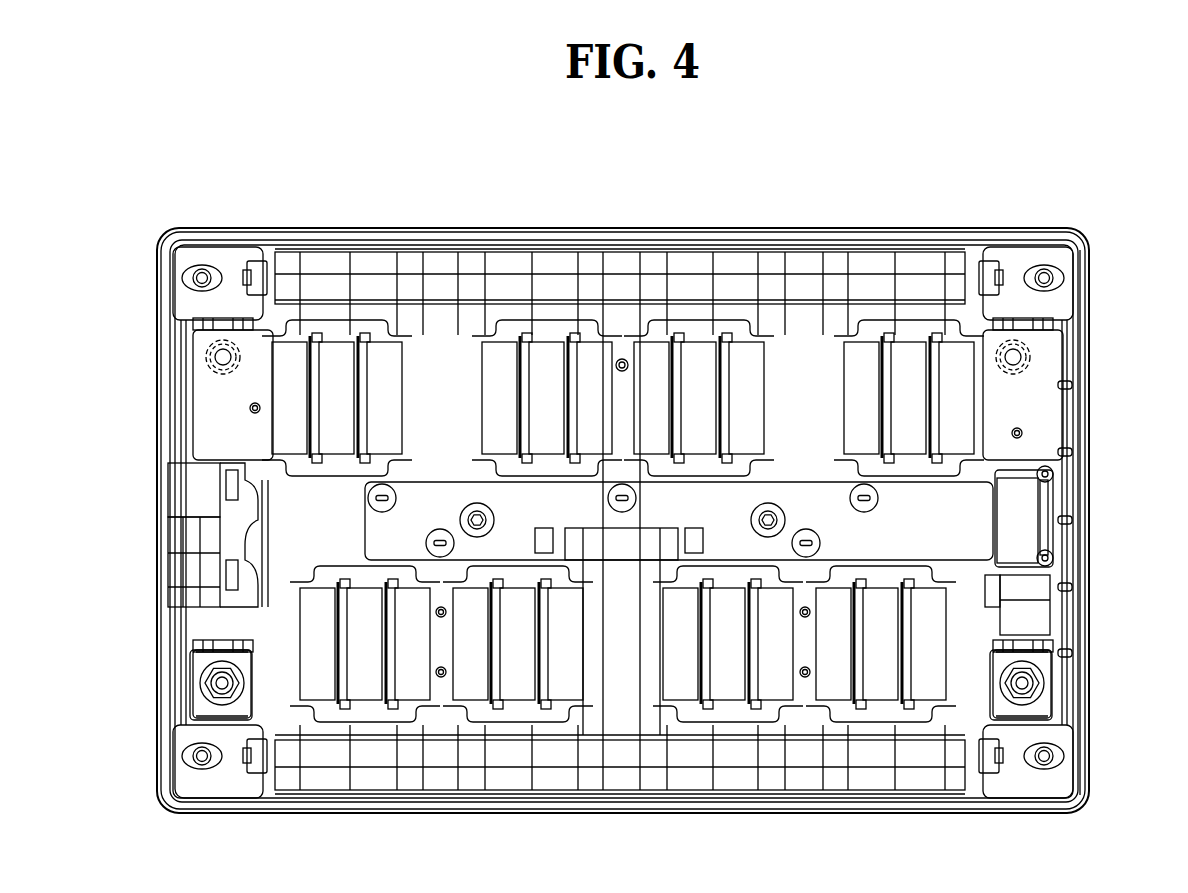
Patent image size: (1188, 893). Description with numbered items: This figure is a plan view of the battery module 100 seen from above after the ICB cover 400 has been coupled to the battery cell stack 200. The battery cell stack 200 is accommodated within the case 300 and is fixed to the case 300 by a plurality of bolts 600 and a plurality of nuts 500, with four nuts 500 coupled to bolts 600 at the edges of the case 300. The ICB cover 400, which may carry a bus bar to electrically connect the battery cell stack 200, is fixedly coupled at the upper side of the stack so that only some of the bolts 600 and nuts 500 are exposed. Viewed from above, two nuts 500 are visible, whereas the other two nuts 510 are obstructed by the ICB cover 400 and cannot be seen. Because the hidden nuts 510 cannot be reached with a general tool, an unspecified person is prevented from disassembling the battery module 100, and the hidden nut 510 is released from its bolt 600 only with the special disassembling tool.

The battery module 100 is at (287, 172).
The battery cell stack 200 is at (328, 776).
The case 300 is at (183, 814).
The interconnect board (ICB) cover 400 is at (1018, 500).
The nut 500 is at (1050, 673).
The nut 510 is at (1050, 358).
The bolt 600 is at (1050, 688).